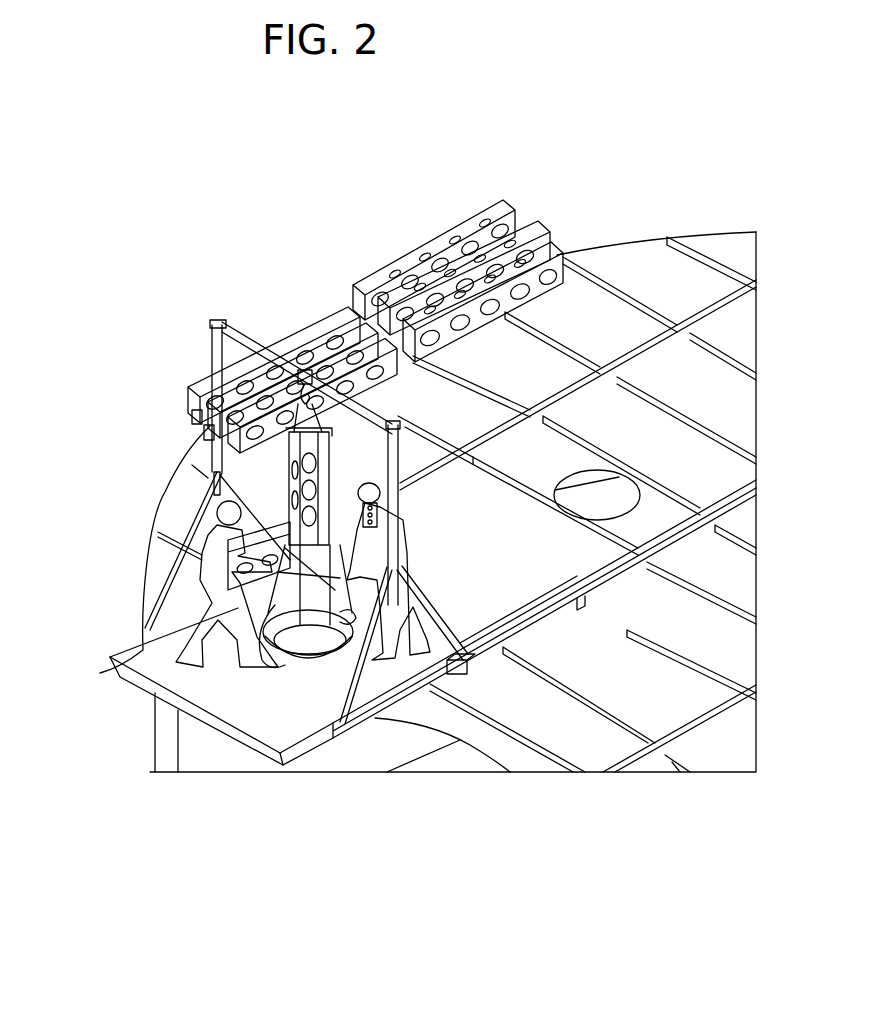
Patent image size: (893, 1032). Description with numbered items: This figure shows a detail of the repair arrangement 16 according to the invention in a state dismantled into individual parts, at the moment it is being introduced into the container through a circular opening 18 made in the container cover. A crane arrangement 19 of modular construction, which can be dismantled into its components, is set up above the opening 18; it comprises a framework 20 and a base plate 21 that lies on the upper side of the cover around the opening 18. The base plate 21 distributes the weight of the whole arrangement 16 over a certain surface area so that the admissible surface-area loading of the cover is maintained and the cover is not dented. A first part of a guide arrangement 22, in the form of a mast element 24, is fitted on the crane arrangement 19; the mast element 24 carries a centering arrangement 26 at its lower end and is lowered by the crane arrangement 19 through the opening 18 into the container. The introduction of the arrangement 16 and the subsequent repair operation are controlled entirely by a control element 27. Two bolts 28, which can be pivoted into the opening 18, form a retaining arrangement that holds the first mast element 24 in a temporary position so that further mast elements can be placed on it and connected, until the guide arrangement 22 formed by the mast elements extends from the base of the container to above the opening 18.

The arrangement 16 is at (210, 311).
The circular opening 18 is at (310, 652).
The crane arrangement 19 is at (455, 600).
The framework 20 is at (200, 417).
The base plate 21 is at (562, 616).
The guide arrangement 22 is at (287, 497).
The mast element 24 is at (365, 317).
The centering arrangement 26 is at (120, 670).
The control element 27 is at (400, 502).
The bolt 28 is at (276, 665).